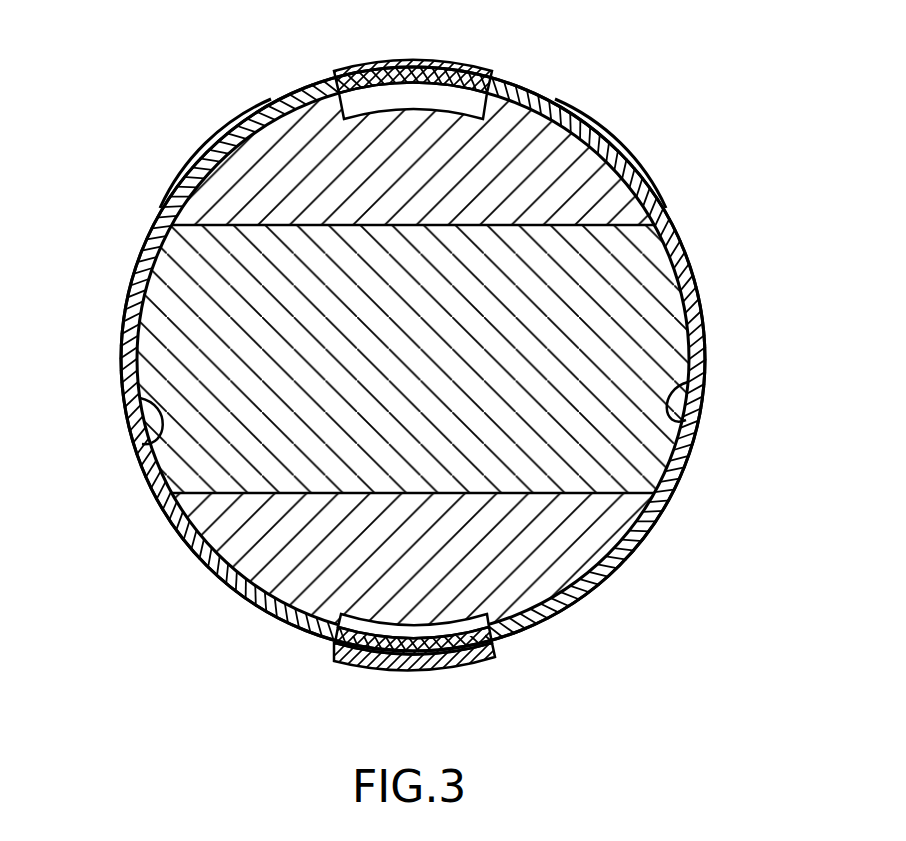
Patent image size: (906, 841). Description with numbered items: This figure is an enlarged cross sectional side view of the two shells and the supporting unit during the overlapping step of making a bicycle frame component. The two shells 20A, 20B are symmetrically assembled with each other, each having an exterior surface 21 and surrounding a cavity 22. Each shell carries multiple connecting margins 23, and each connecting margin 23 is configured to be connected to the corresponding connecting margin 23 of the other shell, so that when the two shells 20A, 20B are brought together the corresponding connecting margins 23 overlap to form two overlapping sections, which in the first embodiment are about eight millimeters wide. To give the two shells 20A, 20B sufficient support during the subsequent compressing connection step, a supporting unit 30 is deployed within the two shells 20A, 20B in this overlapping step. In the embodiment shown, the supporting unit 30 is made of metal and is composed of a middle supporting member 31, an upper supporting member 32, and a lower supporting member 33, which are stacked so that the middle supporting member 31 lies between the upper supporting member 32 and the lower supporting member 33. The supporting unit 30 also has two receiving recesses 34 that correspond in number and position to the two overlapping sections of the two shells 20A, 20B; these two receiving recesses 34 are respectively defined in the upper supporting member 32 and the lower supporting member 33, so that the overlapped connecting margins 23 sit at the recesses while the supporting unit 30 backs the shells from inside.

The shell 20A is at (695, 248).
The shell 20B is at (118, 306).
The exterior surface 21 is at (205, 555).
The cavity 22 is at (150, 425).
The connecting margin 23 is at (362, 82).
The supporting unit 30 is at (455, 359).
The middle supporting member 31 is at (640, 455).
The upper supporting member 32 is at (575, 175).
The lower supporting member 33 is at (570, 555).
The receiving recess 34 is at (425, 98).